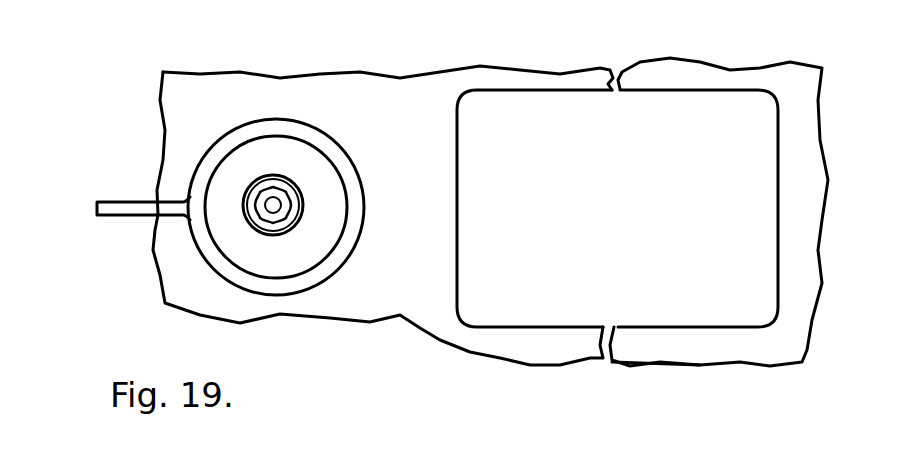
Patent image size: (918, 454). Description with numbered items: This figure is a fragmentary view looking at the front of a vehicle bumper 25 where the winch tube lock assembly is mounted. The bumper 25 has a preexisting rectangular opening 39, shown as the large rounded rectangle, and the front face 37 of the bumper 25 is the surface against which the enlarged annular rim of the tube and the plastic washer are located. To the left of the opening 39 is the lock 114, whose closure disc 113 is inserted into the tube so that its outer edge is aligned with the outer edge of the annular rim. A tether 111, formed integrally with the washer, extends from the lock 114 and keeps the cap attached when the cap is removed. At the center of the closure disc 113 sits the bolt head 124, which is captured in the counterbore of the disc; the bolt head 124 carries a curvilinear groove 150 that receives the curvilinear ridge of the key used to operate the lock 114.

The bumper 25 is at (648, 64).
The face of bumper 37 is at (760, 355).
The rectangular opening 39 is at (714, 90).
The tether 111 is at (113, 200).
The closure disc 113 is at (254, 148).
The lock 114 is at (278, 143).
The curvilinear groove 150 is at (302, 190).
The bolt head 124 is at (298, 213).